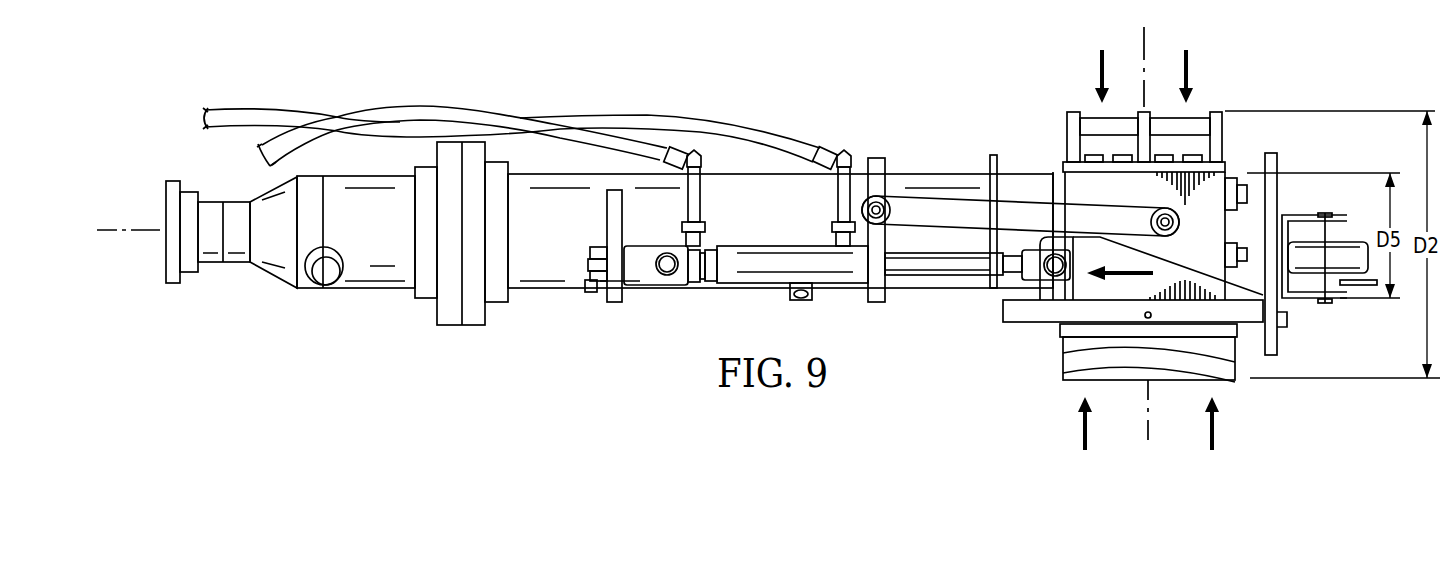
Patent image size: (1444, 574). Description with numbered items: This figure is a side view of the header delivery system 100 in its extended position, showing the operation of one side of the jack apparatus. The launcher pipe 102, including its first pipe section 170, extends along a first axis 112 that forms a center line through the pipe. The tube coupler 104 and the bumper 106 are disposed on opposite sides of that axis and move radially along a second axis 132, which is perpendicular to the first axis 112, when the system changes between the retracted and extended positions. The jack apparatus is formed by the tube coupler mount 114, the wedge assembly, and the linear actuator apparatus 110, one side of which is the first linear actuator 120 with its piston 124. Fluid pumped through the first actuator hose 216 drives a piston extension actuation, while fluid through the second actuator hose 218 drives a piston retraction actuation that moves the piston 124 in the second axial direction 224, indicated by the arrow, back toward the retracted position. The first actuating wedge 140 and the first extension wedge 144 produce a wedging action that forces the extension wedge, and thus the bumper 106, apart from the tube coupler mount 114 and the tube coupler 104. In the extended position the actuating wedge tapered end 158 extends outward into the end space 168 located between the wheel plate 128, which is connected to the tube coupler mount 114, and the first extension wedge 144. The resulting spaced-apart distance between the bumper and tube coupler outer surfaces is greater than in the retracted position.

The header delivery system 100 is at (235, 80).
The launcher pipe 102 is at (553, 300).
The tube coupler 104 is at (1192, 381).
The bumper 106 is at (1070, 111).
The linear actuator apparatus 110 is at (1030, 290).
The first axis 112 is at (130, 229).
The tube coupler mount 114 is at (1023, 325).
The first linear actuator 120 is at (756, 272).
The piston 124 is at (900, 265).
The wheel plate 128 is at (1278, 186).
The second axis 132 is at (1150, 38).
The first actuating wedge 140 is at (1097, 290).
The first extension wedge 144 is at (1212, 183).
The actuating wedge tapered end 158 is at (1256, 275).
The end space 168 is at (1253, 302).
The first pipe section 170 is at (938, 172).
The first actuator hose 216 is at (657, 140).
The second actuator hose 218 is at (750, 126).
The second axial direction 224 is at (1138, 277).